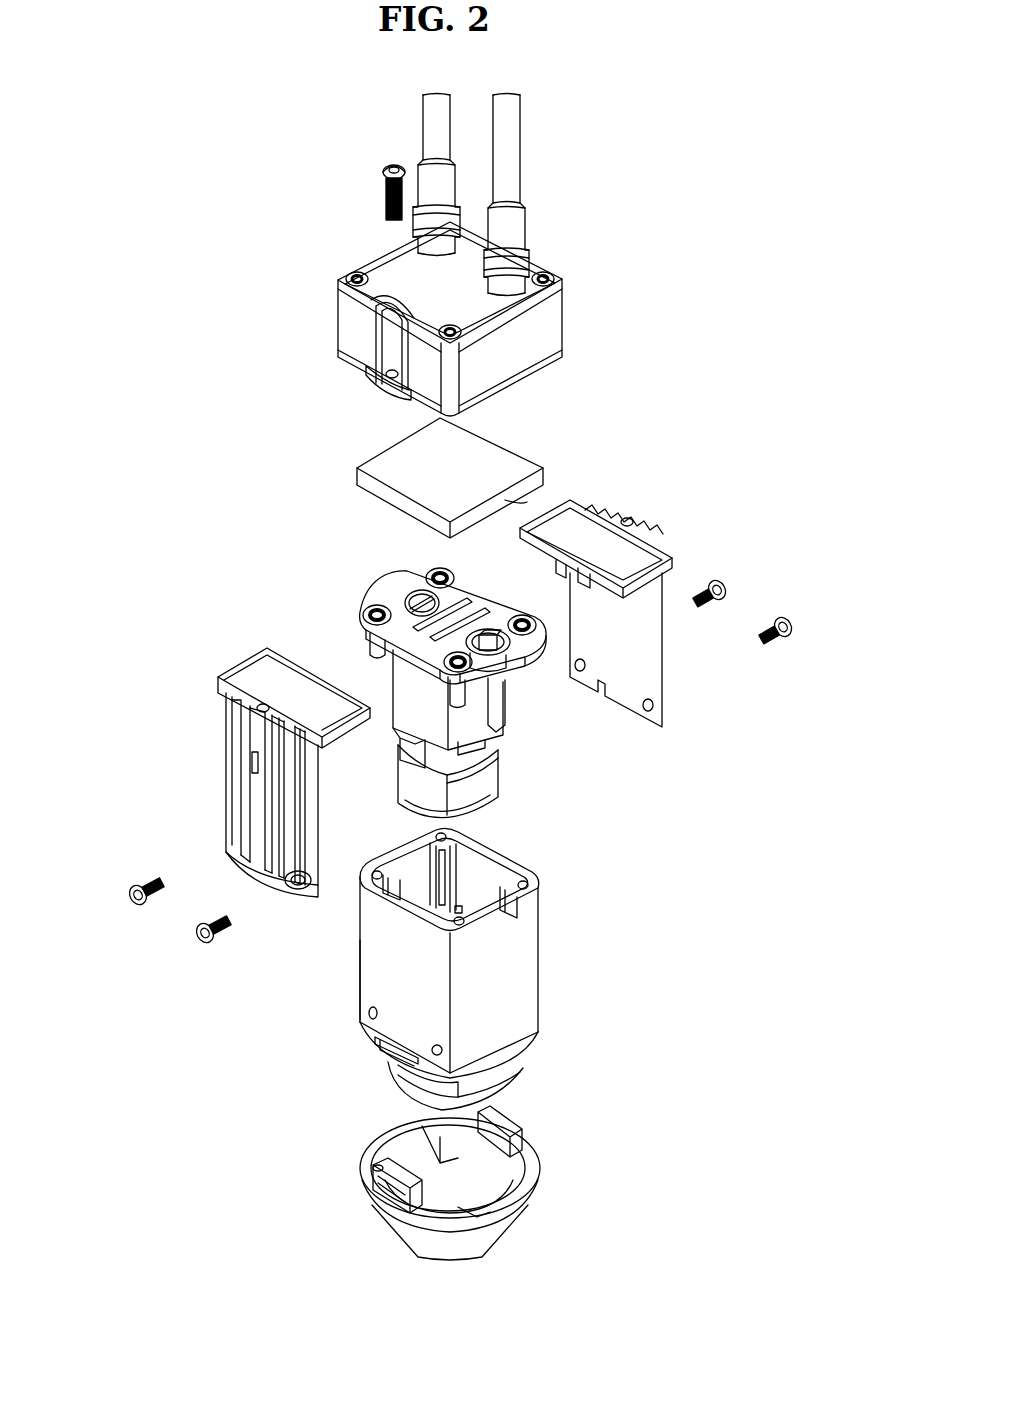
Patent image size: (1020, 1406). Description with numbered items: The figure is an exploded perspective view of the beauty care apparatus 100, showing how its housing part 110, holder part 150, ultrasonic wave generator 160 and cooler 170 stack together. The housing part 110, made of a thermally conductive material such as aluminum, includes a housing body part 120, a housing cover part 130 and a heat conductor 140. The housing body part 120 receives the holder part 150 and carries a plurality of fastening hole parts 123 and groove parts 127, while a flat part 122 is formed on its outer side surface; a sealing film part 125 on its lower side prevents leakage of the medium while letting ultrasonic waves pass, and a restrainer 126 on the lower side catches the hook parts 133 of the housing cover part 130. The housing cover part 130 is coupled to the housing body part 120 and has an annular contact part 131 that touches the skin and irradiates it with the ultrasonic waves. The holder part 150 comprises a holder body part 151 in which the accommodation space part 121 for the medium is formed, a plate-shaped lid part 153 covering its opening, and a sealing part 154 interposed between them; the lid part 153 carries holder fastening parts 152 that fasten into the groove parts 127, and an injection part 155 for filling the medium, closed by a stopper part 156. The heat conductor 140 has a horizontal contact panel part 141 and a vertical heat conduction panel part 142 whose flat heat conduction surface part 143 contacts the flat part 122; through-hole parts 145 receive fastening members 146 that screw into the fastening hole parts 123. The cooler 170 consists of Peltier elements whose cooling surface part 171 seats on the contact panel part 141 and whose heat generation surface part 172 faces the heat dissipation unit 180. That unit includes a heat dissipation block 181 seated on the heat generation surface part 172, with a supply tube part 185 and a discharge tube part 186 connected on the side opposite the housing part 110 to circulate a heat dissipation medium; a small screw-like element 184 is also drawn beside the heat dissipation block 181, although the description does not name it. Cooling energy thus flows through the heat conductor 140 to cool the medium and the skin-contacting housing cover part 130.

The beauty care apparatus 100 is at (127, 113).
The housing part 110 is at (655, 894).
The housing body part 120 is at (545, 930).
The accommodation space part 121 is at (470, 876).
The flat part 122 is at (400, 978).
The fastening hole part 123 is at (428, 1042).
The sealing film part 125 is at (480, 1068).
The restrainer 126 is at (380, 1045).
The groove part 127 is at (462, 912).
The housing cover part 130 is at (540, 1205).
The contact part 131 is at (470, 1258).
The hook part 133 is at (515, 1110).
The heat conductor 140 is at (655, 518).
The contact panel part 141 is at (262, 672).
The heat conduction panel part 142 is at (258, 818).
The heat conduction surface part 143 is at (638, 638).
The through-hole part 145 is at (290, 882).
The fastening member 146 is at (195, 945).
The holder part 150 is at (518, 742).
The holder body part 151 is at (428, 715).
The holder fastening part 152 is at (395, 595).
The lid part 153 is at (395, 592).
The sealing part 154 is at (372, 650).
The injection part 155 is at (495, 668).
The stopper part 156 is at (505, 632).
The ultrasonic wave generator 160 is at (485, 788).
The cooler 170 is at (527, 422).
The cooling surface part 171 is at (527, 502).
The heat generation surface part 172 is at (503, 465).
The heat dissipation unit 180 is at (338, 226).
The heat dissipation block 181 is at (420, 270).
The fixing screw 184 is at (385, 185).
The supply tube part 185 is at (437, 142).
The discharge tube part 186 is at (510, 150).